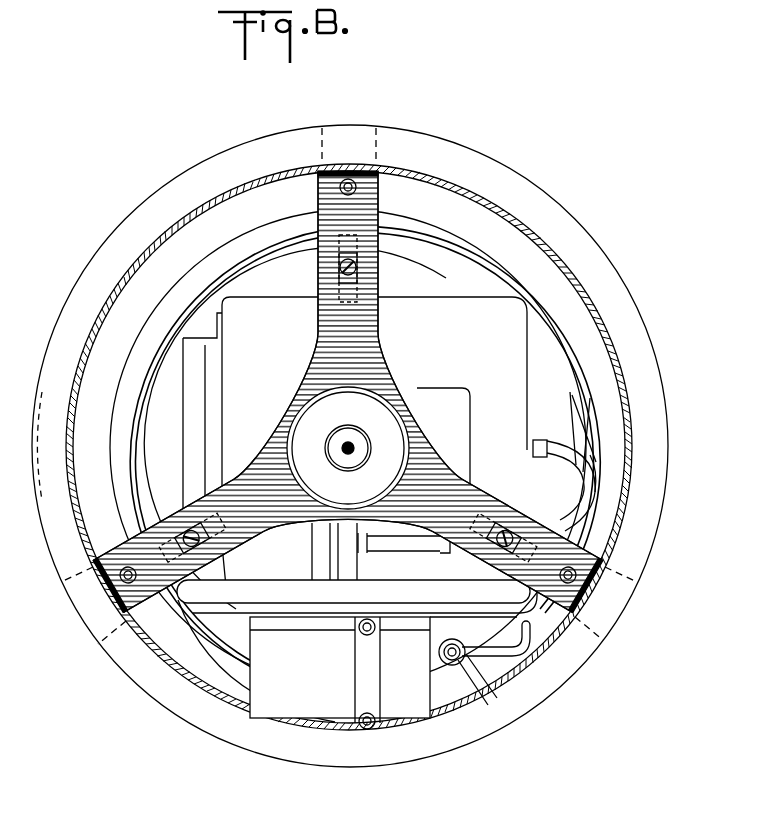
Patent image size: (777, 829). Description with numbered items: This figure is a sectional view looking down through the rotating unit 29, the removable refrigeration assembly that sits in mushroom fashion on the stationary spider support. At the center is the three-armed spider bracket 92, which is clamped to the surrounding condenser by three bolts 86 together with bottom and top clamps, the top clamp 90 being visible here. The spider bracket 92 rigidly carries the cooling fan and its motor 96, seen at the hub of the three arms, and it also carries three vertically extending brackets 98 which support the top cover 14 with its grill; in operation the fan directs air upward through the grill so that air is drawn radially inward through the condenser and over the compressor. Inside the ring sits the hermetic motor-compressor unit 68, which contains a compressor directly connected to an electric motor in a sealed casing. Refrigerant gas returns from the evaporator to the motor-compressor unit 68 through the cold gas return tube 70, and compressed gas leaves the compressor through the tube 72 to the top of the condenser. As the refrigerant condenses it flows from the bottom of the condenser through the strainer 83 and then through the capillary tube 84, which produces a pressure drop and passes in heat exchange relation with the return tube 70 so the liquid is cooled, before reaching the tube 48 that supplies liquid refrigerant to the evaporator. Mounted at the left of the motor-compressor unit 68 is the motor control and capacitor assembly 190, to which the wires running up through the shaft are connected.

The top cover 14 is at (100, 308).
The rotating unit 29 is at (132, 722).
The tube 48 is at (592, 483).
The motor-compressor unit 68 is at (492, 302).
The tube 70 is at (215, 258).
The tube 72 is at (390, 545).
The strainer 83 is at (445, 655).
The capillary tube 84 is at (523, 633).
The bolts 86 is at (357, 188).
The top clamp 90 is at (322, 145).
The spider bracket 92 is at (345, 356).
The motor 96 is at (388, 477).
The brackets 98 is at (358, 267).
The motor control and capacitor assembly 190 is at (330, 677).